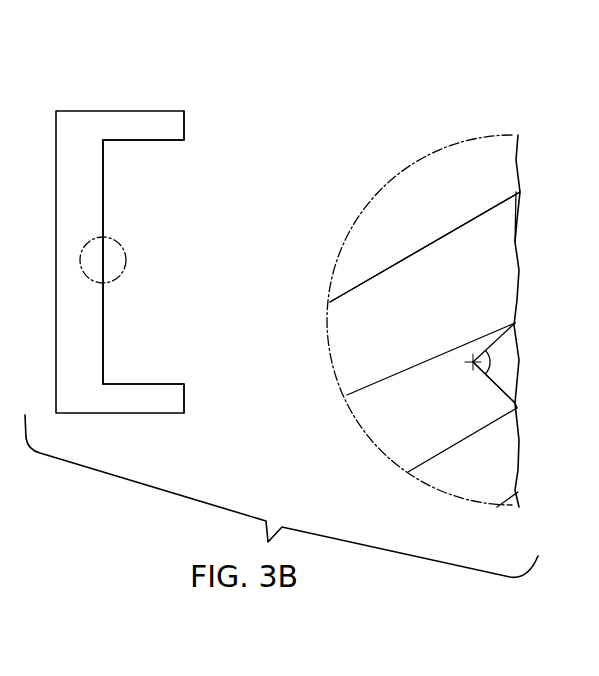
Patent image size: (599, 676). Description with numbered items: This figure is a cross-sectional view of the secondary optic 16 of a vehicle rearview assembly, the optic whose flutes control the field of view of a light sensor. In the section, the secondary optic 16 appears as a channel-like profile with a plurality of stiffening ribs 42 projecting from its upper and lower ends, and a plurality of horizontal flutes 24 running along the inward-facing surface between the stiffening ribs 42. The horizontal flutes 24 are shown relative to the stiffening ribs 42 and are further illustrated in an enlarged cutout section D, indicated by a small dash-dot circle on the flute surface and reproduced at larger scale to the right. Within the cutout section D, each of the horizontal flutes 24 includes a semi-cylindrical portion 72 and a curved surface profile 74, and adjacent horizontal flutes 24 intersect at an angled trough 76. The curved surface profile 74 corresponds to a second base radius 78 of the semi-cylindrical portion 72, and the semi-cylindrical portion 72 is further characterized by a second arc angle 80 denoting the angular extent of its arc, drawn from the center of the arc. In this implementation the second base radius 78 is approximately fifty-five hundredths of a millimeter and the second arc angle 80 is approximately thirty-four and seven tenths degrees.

The secondary optic 16 is at (104, 90).
The stiffening ribs 42 is at (148, 127).
The horizontal flutes 24 is at (106, 330).
The semi-cylindrical portion 72 is at (510, 275).
The curved surface profile 74 is at (521, 196).
The angled trough 76 is at (521, 242).
The second base radius 78 is at (510, 380).
The second arc angle 80 is at (490, 353).
The cutout section D is at (128, 243).